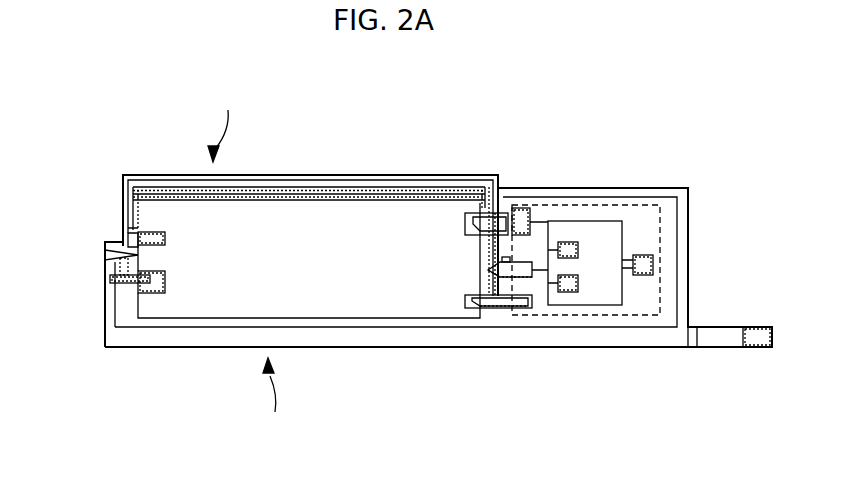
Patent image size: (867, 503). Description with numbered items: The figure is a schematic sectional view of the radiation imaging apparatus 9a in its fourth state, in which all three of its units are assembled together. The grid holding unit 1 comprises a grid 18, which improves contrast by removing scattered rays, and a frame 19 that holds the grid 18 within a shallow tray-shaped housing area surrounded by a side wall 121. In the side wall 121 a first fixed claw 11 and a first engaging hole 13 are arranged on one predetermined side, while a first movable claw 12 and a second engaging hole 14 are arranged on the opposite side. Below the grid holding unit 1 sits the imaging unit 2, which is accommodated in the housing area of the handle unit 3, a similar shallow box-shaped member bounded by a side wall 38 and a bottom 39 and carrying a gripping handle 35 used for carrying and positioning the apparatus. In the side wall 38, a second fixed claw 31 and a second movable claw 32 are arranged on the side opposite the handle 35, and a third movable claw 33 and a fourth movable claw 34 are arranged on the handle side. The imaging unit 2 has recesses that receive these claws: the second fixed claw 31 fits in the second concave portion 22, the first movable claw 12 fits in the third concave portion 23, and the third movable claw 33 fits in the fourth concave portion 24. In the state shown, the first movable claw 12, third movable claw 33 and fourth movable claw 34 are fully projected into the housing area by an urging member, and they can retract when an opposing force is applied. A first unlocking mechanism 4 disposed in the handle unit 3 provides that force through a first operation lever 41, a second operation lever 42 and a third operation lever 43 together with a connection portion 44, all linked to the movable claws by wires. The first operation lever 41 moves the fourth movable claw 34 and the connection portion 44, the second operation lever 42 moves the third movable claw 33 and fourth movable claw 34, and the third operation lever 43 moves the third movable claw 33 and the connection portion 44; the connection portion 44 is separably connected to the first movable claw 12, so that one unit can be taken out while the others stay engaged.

The grid holding unit 1 is at (222, 123).
The imaging unit 2 is at (280, 197).
The handle unit 3 is at (438, 315).
The first unlocking mechanism 4 is at (598, 205).
The radiation imaging apparatus 9a is at (743, 457).
The first fixed claw 11 is at (153, 236).
The first movable claw 12 is at (496, 197).
The first engaging hole 13 is at (126, 237).
The second engaging hole 14 is at (493, 260).
The grid 18 is at (388, 193).
The frame 19 is at (323, 186).
The second concave portion 22 is at (163, 290).
The third concave portion 23 is at (465, 215).
The fourth concave portion 24 is at (465, 300).
The second fixed claw 31 is at (130, 285).
The second movable claw 32 is at (106, 256).
The third movable claw 33 is at (503, 305).
The fourth movable claw 34 is at (488, 270).
The gripping handle 35 is at (757, 347).
The side wall 38 is at (105, 338).
The bottom 39 is at (382, 347).
The first operation lever 41 is at (568, 245).
The second operation lever 42 is at (570, 293).
The third operation lever 43 is at (655, 265).
The connection portion 44 is at (521, 210).
The side wall 121 is at (123, 186).